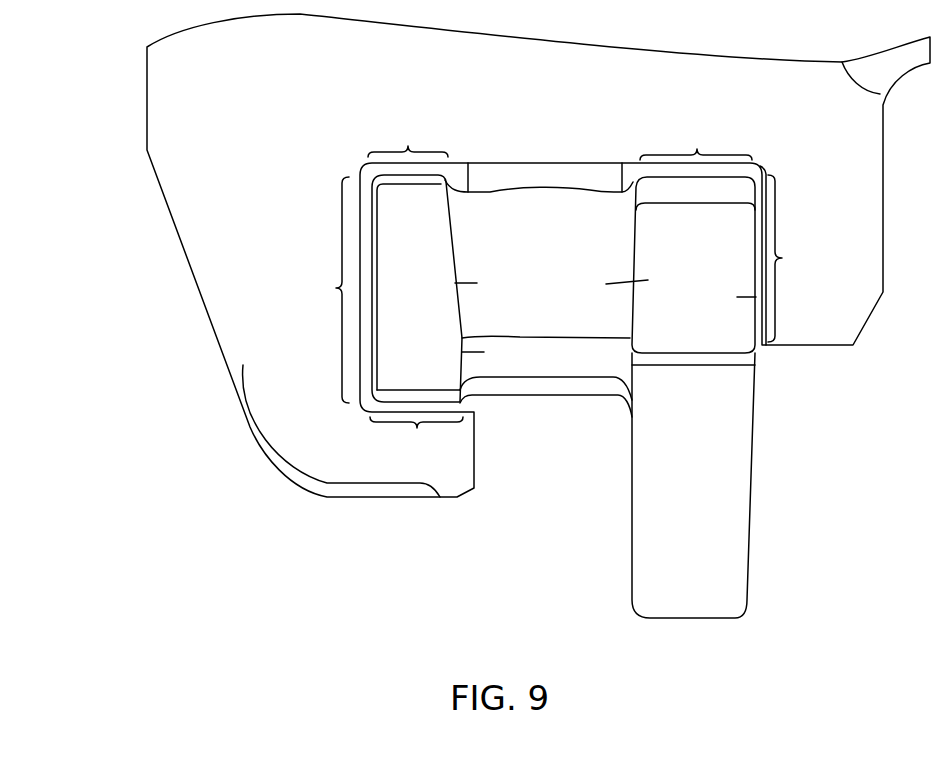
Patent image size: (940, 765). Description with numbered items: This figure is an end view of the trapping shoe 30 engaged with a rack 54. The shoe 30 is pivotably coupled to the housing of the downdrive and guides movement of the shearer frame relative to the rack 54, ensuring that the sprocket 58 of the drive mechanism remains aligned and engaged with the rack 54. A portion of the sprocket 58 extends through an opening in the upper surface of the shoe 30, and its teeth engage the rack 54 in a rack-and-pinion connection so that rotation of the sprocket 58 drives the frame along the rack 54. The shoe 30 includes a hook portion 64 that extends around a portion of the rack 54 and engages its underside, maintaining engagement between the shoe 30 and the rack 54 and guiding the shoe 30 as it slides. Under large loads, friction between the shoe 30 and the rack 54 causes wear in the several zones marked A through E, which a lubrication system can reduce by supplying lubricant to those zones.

The trapping shoe 30 is at (178, 193).
The rack 54 is at (727, 478).
The sprocket 58 is at (562, 175).
The hook portion 64 is at (318, 452).